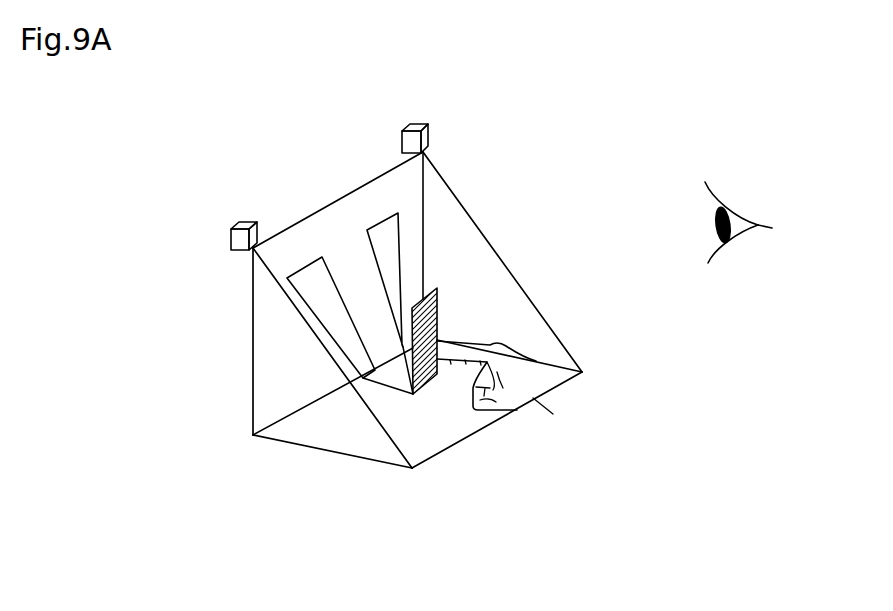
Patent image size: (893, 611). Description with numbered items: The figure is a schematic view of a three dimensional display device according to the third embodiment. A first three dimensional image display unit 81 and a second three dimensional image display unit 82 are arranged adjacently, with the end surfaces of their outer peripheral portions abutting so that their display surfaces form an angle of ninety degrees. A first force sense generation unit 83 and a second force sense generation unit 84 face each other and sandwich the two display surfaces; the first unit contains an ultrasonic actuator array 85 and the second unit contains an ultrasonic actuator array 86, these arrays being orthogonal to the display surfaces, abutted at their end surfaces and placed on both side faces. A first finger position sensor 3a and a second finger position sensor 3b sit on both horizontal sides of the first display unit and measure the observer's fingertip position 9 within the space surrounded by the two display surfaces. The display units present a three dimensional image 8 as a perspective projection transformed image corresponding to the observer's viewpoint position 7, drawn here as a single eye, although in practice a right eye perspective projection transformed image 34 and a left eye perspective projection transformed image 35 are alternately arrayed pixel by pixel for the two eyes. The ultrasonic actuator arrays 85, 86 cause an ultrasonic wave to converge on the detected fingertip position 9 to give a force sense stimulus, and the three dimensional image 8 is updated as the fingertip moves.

The first finger position sensor 3a is at (232, 242).
The second finger position sensor 3b is at (412, 126).
The observer's viewpoint position 7 is at (726, 208).
The three dimensional image 8 is at (433, 307).
The fingertip position 9 is at (443, 363).
The right eye perspective projection transformed image 34 is at (290, 274).
The left eye perspective projection transformed image 35 is at (399, 237).
The first three dimensional image display unit 81 is at (368, 190).
The second three dimensional image display unit 82 is at (442, 445).
The first force sense generation unit 83 is at (270, 363).
The second force sense generation unit 84 is at (523, 310).
The ultrasonic actuator array 85 is at (262, 400).
The ultrasonic actuator array 86 is at (557, 350).